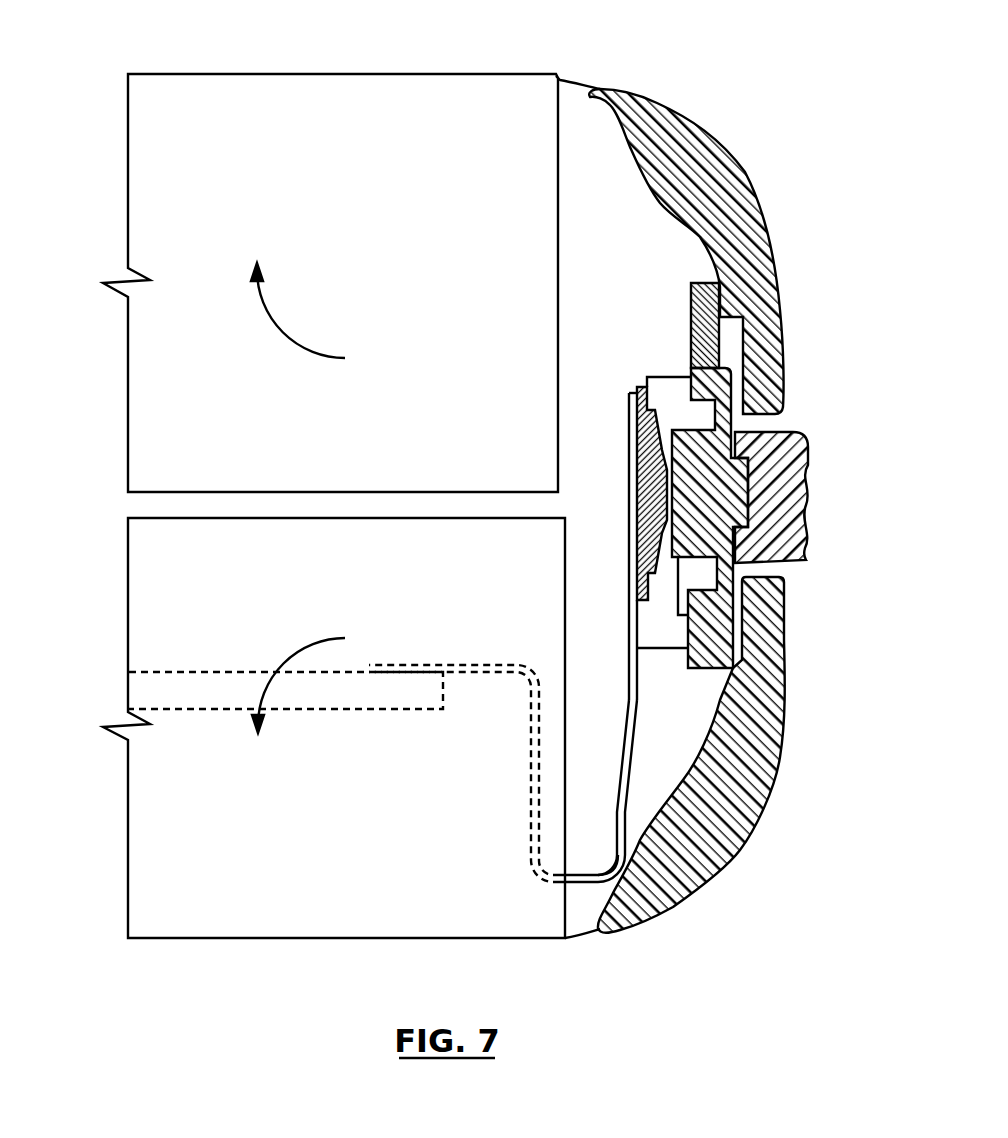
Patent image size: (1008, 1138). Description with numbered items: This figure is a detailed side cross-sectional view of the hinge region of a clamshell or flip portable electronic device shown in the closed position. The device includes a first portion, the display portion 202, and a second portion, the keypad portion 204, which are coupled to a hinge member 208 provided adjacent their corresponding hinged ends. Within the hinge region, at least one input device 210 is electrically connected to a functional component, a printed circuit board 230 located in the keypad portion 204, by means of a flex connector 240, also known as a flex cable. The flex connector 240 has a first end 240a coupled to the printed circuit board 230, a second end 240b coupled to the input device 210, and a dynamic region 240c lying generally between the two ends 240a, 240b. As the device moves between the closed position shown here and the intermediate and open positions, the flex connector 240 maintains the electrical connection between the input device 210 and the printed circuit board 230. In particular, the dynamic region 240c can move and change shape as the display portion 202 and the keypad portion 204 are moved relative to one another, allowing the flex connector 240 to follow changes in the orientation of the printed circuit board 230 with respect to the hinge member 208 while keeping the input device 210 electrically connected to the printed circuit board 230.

The display portion 202 is at (344, 73).
The keypad portion 204 is at (147, 875).
The hinge member 208 is at (720, 860).
The input device 210 is at (807, 525).
The printed circuit board 230 is at (195, 671).
The flex connector 240 is at (637, 699).
The first end 240a is at (398, 668).
The second end 240b is at (633, 423).
The dynamic region 240c is at (612, 858).